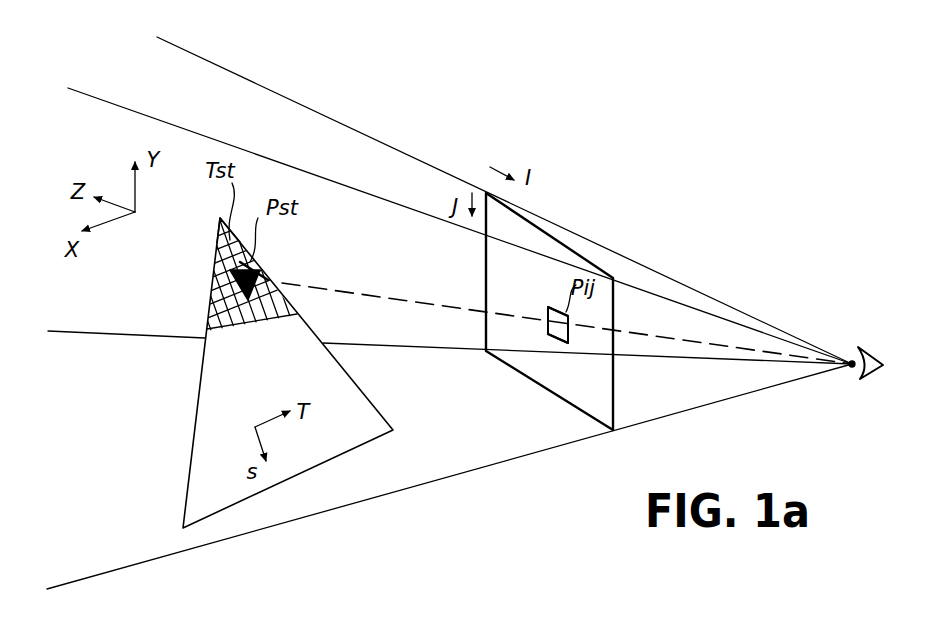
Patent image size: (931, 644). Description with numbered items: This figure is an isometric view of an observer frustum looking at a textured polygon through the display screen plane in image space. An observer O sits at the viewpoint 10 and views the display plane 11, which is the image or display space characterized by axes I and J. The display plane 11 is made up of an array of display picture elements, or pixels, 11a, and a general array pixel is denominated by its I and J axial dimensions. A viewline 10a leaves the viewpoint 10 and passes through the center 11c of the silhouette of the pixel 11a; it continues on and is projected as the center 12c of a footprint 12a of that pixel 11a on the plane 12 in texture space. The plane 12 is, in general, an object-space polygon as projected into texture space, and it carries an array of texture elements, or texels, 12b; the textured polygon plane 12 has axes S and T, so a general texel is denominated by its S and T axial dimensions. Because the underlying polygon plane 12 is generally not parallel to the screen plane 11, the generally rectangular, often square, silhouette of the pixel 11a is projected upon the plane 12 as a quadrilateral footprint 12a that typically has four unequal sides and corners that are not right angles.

The viewpoint 10 is at (852, 360).
The viewline 10a is at (678, 340).
The display plane 11 is at (615, 400).
The pixel 11a is at (569, 336).
The center of the pixel silhouette 11c is at (547, 318).
The plane in texture space 12 is at (381, 411).
The footprint 12a is at (253, 278).
The texels 12b is at (217, 222).
The center of the footprint 12c is at (248, 265).